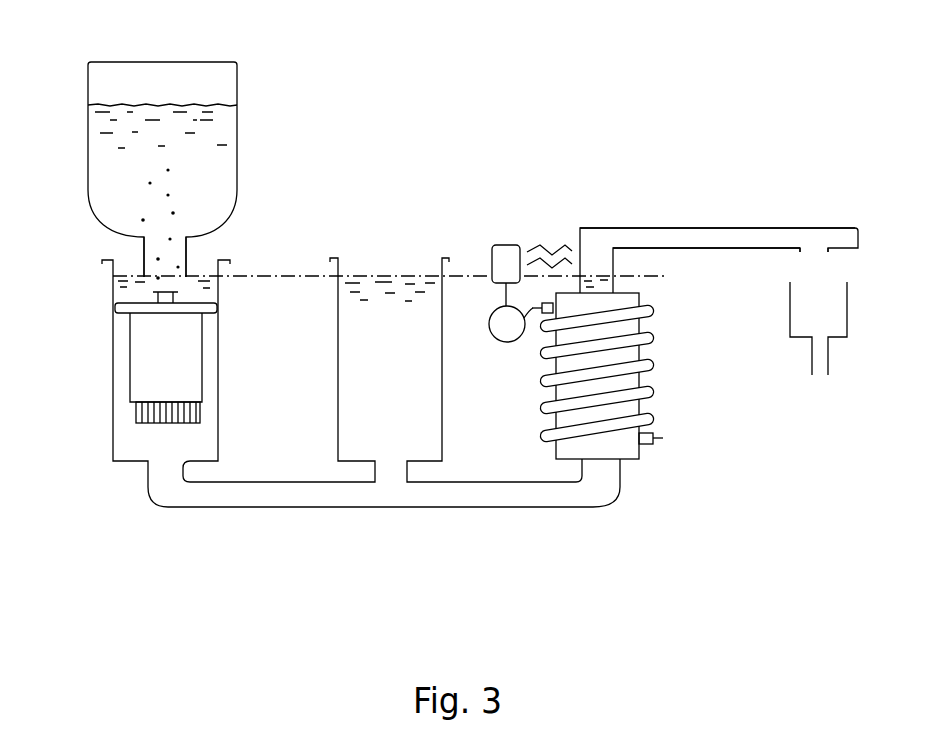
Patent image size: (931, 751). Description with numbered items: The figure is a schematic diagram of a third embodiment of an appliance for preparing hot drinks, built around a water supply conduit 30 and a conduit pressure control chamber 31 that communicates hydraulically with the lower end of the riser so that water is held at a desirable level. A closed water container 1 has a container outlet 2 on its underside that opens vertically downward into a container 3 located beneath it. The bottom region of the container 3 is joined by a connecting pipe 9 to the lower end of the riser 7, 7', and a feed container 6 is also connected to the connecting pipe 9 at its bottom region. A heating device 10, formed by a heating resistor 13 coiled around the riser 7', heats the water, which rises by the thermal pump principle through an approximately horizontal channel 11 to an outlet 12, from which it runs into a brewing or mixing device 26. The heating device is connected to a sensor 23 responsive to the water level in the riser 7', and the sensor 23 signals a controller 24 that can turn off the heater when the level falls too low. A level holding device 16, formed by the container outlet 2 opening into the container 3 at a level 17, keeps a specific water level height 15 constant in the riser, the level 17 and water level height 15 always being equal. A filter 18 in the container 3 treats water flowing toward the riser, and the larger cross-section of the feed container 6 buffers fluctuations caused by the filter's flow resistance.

The water container 1 is at (213, 135).
The container outlet 2 is at (153, 250).
The container 3 is at (122, 343).
The feed container 6 is at (362, 378).
The riser 7 is at (521, 376).
The riser 7' is at (690, 452).
The connecting pipe 9 is at (492, 492).
The heating device 10 is at (674, 349).
The channel 11 is at (767, 237).
The outlet 12 is at (818, 250).
The heating resistor 13 is at (652, 394).
The water level height 15 is at (674, 270).
The level holding device 16 is at (366, 539).
The level 17 is at (247, 273).
The filter 18 is at (145, 379).
The sensor 23 is at (492, 247).
The controller 24 is at (497, 340).
The drink preparation chamber 26 is at (847, 323).
The water supply conduit 30 is at (70, 155).
The conduit pressure control chamber 31 is at (362, 118).